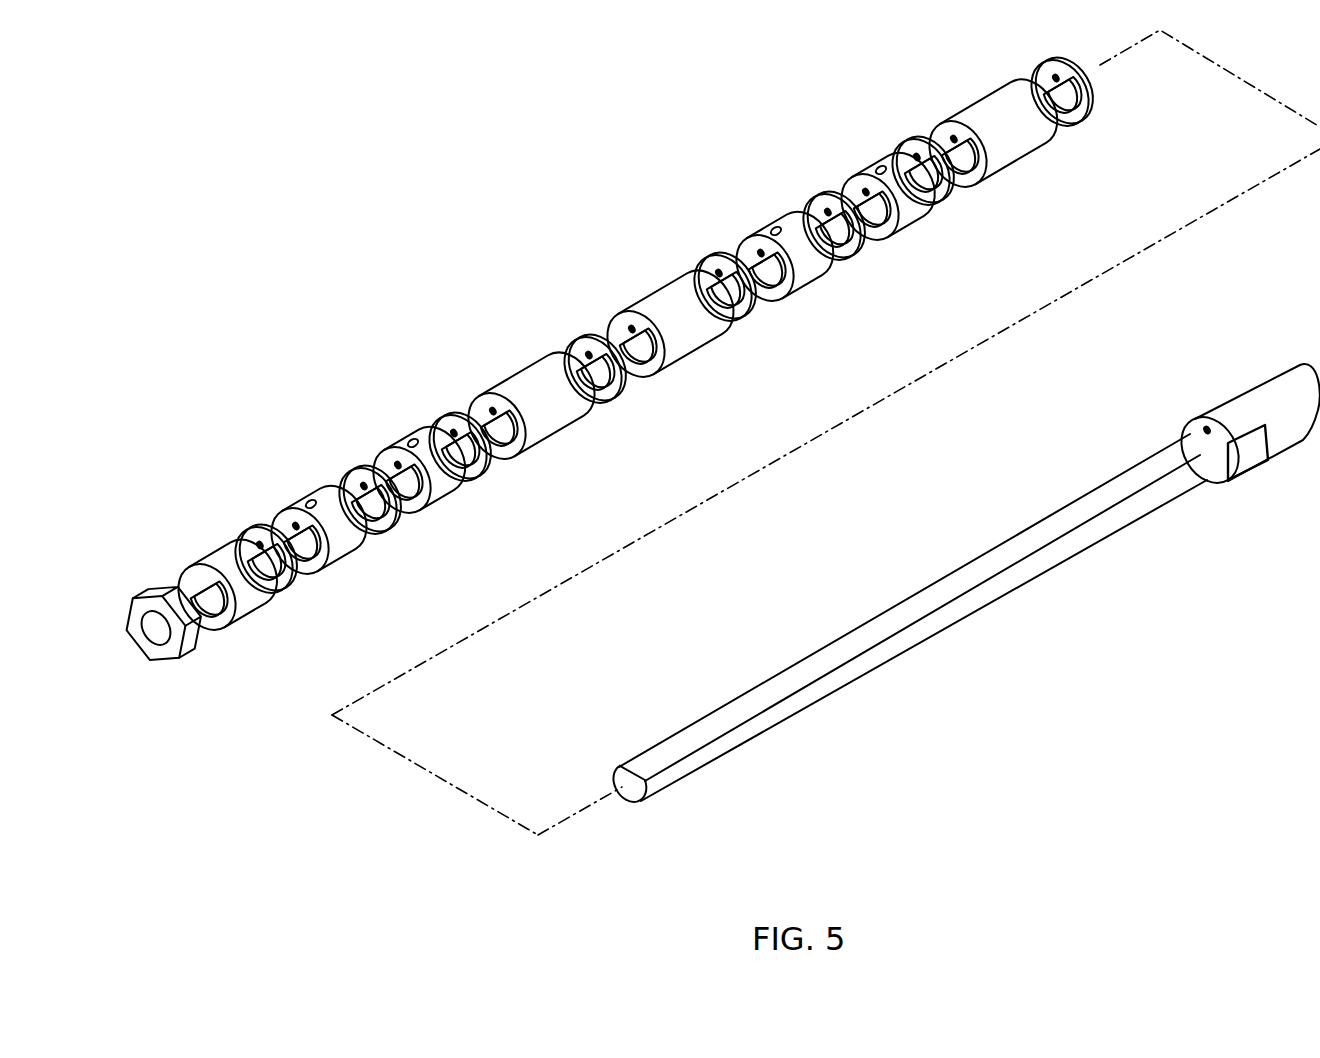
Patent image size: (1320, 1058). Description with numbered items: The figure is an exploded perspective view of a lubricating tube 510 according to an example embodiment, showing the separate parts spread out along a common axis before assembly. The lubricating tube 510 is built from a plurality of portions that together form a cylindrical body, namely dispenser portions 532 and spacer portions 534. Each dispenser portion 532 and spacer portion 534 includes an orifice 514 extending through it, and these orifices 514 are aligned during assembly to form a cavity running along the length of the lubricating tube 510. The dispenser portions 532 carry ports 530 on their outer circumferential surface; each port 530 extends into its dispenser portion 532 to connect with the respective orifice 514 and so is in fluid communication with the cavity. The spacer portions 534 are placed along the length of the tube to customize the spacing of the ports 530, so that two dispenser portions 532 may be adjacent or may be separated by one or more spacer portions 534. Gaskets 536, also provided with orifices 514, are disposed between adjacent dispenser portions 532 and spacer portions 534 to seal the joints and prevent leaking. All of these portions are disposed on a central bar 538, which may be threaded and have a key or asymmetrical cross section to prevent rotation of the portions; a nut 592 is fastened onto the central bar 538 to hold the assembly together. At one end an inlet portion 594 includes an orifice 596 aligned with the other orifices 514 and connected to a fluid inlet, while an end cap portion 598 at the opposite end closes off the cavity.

The lubricating tube 510 is at (1053, 685).
The orifice 514 is at (298, 518).
The port 530 is at (315, 498).
The dispenser portion 532 is at (905, 215).
The spacer portion 534 is at (1010, 150).
The gasket 536 is at (1080, 115).
The central bar 538 is at (873, 716).
The nut 592 is at (174, 638).
The inlet portion 594 is at (1262, 397).
The orifice 596 is at (1205, 430).
The end cap portion 598 is at (238, 601).